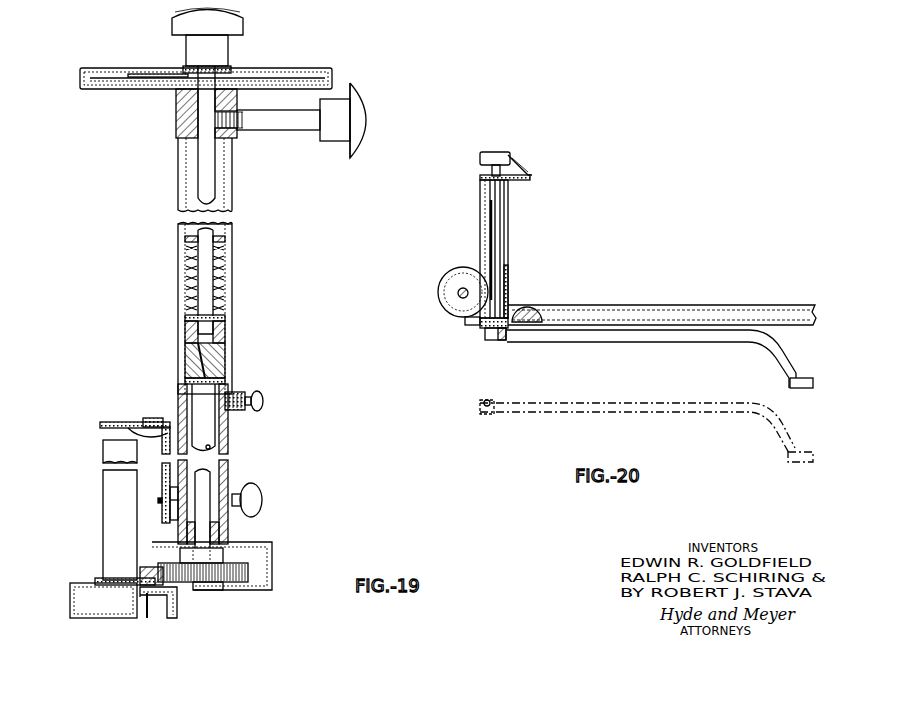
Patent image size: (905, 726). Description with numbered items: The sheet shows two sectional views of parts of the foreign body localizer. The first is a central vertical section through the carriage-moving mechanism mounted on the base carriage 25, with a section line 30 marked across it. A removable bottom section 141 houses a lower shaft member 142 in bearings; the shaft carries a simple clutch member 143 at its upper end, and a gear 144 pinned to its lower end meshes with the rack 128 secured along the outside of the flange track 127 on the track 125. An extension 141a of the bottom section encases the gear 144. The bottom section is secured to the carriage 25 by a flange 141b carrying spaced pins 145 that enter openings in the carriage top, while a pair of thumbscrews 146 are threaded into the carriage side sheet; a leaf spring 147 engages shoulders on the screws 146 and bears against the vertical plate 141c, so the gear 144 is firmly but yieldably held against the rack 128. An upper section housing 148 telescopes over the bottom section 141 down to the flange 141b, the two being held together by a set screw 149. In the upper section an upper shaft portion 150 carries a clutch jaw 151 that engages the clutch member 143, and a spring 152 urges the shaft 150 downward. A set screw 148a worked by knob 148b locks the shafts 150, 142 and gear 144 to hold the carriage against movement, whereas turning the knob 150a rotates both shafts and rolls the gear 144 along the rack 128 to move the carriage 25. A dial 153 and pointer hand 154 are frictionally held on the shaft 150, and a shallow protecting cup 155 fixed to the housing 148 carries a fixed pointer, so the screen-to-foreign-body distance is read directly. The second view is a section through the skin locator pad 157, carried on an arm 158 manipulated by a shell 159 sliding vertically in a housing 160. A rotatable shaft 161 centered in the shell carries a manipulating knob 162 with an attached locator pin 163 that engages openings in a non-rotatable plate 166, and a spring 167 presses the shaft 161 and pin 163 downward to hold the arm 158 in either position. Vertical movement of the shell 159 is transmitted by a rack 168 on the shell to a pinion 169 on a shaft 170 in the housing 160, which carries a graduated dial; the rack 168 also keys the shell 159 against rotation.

In FIG. 19, the base carriage 25 is at (160, 436).
In FIG. 19, the section line 30— 30 is at (120, 505).
In FIG. 19, the track 125 is at (178, 603).
In FIG. 19, the flange track 127 is at (100, 580).
In FIG. 19, the rack 128 is at (147, 618).
In FIG. 19, the bottom section 141 is at (225, 452).
In FIG. 19, the extension 141a is at (273, 568).
In FIG. 19, the flange 141b is at (162, 421).
In FIG. 19, the vertical plate 141c is at (162, 466).
In FIG. 19, the lower shaft member 142 is at (208, 490).
In FIG. 19, the clutch member 143 is at (225, 360).
In FIG. 19, the gear 144 is at (245, 566).
In FIG. 19, the pins 145 is at (124, 421).
In FIG. 19, the thumbscrews 146 is at (292, 524).
In FIG. 19, the leaf spring 147 is at (178, 498).
In FIG. 19, the upper section housing 148 is at (232, 185).
In FIG. 19, the set screw 148a is at (306, 122).
In FIG. 19, the knob 148b is at (368, 123).
In FIG. 19, the set screw 149 is at (263, 401).
In FIG. 20, the set screw 149 is at (527, 308).
In FIG. 19, the upper shaft portion 150 is at (205, 183).
In FIG. 19, the knob 150a is at (246, 21).
In FIG. 19, the clutch jaw 151 is at (226, 338).
In FIG. 19, the spring 152 is at (225, 278).
In FIG. 19, the dial 153 is at (279, 77).
In FIG. 19, the pointer hand 154 is at (141, 74).
In FIG. 19, the protecting cup 155 is at (98, 90).
In FIG. 20, the skin locator pad 157 is at (792, 378).
In FIG. 20, the arm 158 is at (603, 333).
In FIG. 20, the shell 159 is at (508, 207).
In FIG. 20, the housing 160 is at (456, 267).
In FIG. 20, the shaft 161 is at (497, 238).
In FIG. 20, the manipulating knob 162 is at (487, 152).
In FIG. 20, the locator pin 163 is at (535, 178).
In FIG. 20, the plate 166 is at (528, 172).
In FIG. 20, the spring 167 is at (484, 330).
In FIG. 20, the rack 168 is at (482, 193).
In FIG. 20, the pinion 169 is at (455, 286).
In FIG. 20, the shaft 170 is at (460, 296).